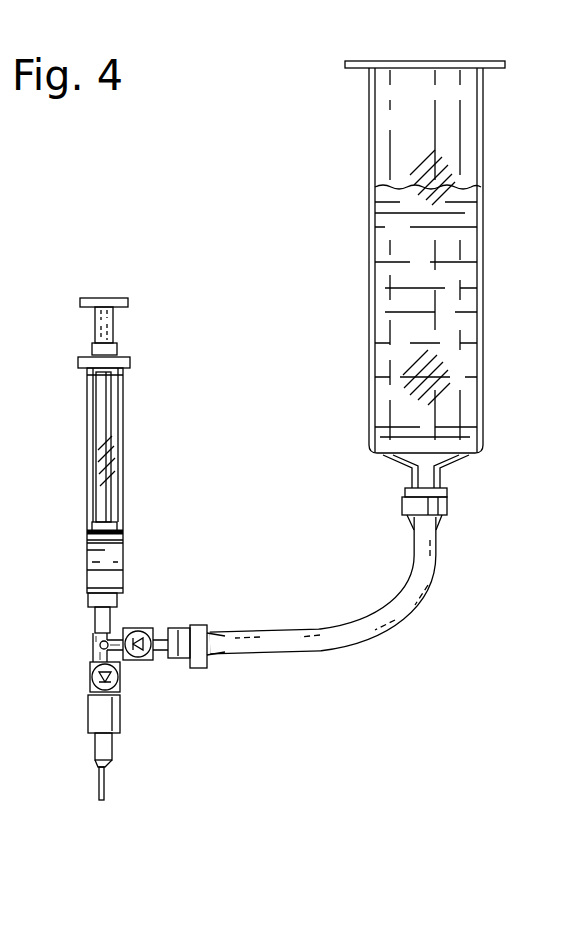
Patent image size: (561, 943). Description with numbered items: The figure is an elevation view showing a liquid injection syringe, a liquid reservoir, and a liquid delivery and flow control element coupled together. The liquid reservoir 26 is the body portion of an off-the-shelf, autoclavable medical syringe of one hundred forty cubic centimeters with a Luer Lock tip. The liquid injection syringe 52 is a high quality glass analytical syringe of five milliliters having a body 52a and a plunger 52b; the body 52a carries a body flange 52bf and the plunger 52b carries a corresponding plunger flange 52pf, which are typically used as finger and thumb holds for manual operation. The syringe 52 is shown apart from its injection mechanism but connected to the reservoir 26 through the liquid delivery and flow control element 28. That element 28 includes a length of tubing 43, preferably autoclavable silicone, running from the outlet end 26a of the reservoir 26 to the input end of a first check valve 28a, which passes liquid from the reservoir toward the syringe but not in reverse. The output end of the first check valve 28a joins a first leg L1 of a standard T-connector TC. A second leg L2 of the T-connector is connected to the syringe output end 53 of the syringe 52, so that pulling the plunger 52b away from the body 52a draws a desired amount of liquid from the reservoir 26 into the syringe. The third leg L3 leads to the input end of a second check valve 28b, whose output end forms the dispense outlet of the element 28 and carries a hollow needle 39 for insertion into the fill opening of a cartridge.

The liquid reservoir 26 is at (506, 147).
The outlet end 26a is at (460, 507).
The liquid delivery and flow control element 28 is at (199, 583).
The first check valve 28a is at (146, 617).
The second check valve 28b is at (128, 675).
The tubing 43 is at (385, 622).
The liquid injection syringe 52 is at (146, 435).
The plunger flange 52pf is at (128, 302).
The body flange 52bf is at (130, 362).
The body 52a is at (123, 425).
The plunger 52b is at (103, 503).
The syringe output end 53 is at (85, 618).
The T-connector TC is at (93, 648).
The first leg L1 is at (122, 626).
The second leg L2 is at (92, 638).
The third leg L3 is at (95, 657).
The hollow needle 39 is at (105, 785).